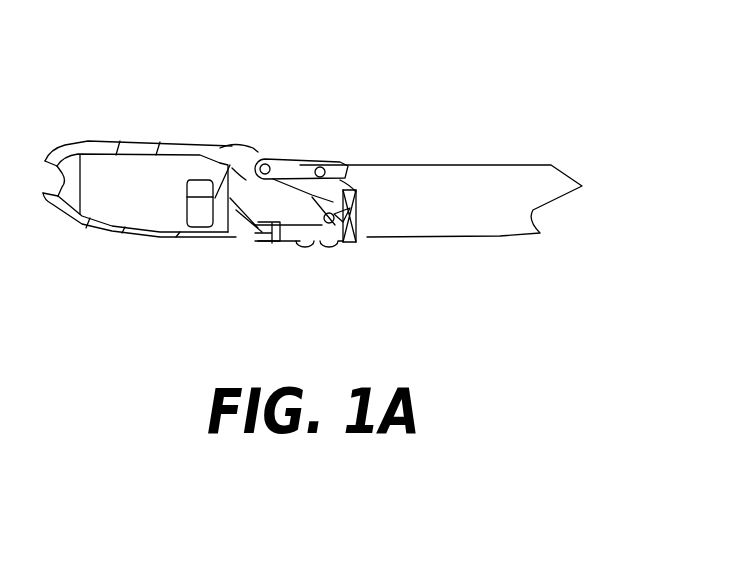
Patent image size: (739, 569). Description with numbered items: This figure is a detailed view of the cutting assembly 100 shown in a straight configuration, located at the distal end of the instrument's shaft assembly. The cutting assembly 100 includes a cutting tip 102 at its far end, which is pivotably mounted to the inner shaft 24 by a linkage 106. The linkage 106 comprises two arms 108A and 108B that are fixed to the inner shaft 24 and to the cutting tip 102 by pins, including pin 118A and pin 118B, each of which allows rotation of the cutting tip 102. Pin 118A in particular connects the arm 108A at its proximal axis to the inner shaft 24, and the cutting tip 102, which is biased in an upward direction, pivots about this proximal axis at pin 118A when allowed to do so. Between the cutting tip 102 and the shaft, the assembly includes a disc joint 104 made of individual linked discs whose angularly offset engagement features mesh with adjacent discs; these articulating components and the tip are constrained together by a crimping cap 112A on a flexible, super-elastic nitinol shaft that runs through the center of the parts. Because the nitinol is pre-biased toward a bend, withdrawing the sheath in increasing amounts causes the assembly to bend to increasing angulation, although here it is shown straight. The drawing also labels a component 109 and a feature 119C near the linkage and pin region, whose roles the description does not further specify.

The cutting assembly 100 is at (172, 83).
The cutting tip 102 is at (76, 126).
The disc joint 104 is at (347, 162).
The linkage 106 is at (251, 118).
The arm 108A is at (265, 207).
The arm 108B is at (295, 163).
The connecting bar 109 is at (335, 225).
The crimping cap 112A is at (187, 195).
The pin 118A is at (334, 217).
The pin 118B is at (322, 167).
The cam slot 119C is at (237, 170).
The inner shaft 24 is at (500, 178).